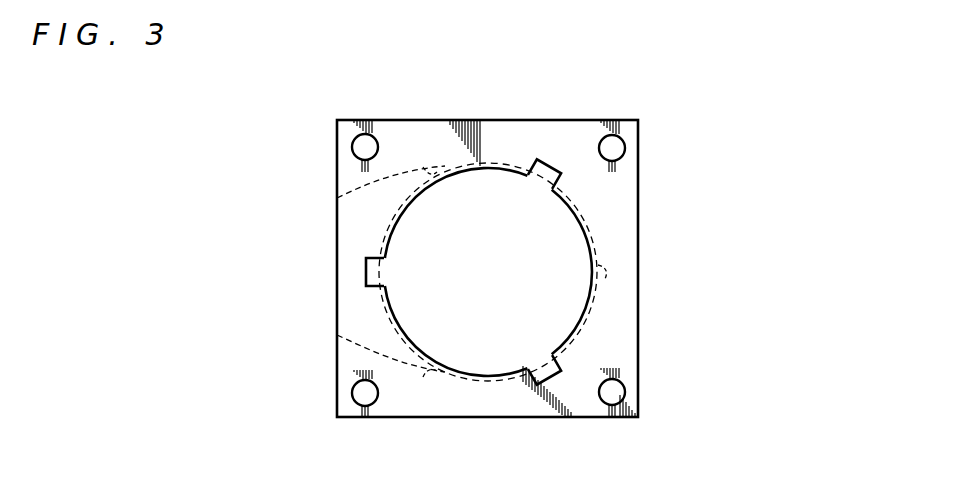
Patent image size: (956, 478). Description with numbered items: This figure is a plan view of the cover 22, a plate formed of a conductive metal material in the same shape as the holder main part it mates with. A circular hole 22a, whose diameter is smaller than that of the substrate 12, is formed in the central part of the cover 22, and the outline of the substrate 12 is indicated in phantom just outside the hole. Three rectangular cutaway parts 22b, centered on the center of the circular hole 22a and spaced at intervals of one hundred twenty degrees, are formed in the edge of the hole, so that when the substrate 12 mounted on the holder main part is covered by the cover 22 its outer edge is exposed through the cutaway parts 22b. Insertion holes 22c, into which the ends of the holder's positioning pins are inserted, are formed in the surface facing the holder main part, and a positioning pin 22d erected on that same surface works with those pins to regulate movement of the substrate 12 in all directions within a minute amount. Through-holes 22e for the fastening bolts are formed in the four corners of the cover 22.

The substrate 12 is at (592, 238).
The cover 22 is at (602, 120).
The circular hole 22a is at (565, 301).
The rectangular cutaway parts 22b is at (542, 180).
The insertion holes 22c is at (337, 198).
The positioning pin 22d is at (610, 268).
The through-holes 22e is at (362, 150).